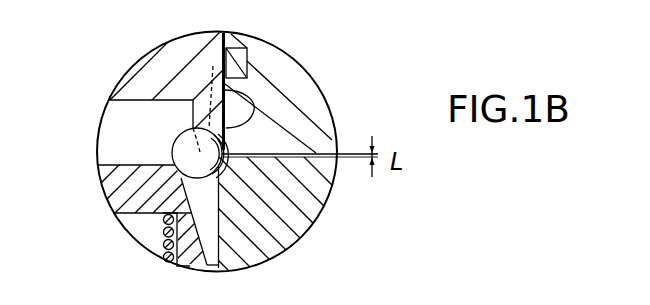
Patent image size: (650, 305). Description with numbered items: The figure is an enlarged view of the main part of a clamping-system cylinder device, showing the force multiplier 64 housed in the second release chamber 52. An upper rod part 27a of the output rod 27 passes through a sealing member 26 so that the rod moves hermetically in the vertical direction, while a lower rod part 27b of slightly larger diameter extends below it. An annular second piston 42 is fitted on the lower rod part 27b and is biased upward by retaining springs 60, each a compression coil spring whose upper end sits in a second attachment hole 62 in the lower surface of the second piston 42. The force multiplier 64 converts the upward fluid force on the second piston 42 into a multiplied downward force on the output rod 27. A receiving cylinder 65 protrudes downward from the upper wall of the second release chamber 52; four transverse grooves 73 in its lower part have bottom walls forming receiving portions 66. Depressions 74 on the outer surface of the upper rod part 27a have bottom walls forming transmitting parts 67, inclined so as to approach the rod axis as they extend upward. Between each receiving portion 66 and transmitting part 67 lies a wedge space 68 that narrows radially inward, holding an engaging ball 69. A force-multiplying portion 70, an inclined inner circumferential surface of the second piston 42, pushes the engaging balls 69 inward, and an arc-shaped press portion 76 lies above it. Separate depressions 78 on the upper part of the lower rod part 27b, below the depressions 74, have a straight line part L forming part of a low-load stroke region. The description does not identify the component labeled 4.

The fuel injector housing 4 is at (139, 59).
The sealing member 26 is at (248, 57).
The output rod 27 is at (303, 233).
The upper rod part 27a is at (303, 82).
The lower rod part 27b is at (297, 232).
The second piston 42 is at (118, 193).
The second release chamber 52 is at (108, 144).
The retaining spring 60 is at (160, 248).
The second attachment hole 62 is at (95, 252).
The force multiplier 64 is at (160, 139).
The receiving cylinder 65 is at (191, 76).
The receiving portion 66 is at (212, 126).
The transmitting part 67 is at (232, 131).
The wedge space 68 is at (277, 124).
The engaging ball 69 is at (173, 154).
The force-multiplying portion 70 is at (163, 238).
The transverse groove 73 is at (212, 91).
The depression 74 is at (254, 98).
The press portion 76 is at (172, 175).
The separate depression 78 is at (225, 177).